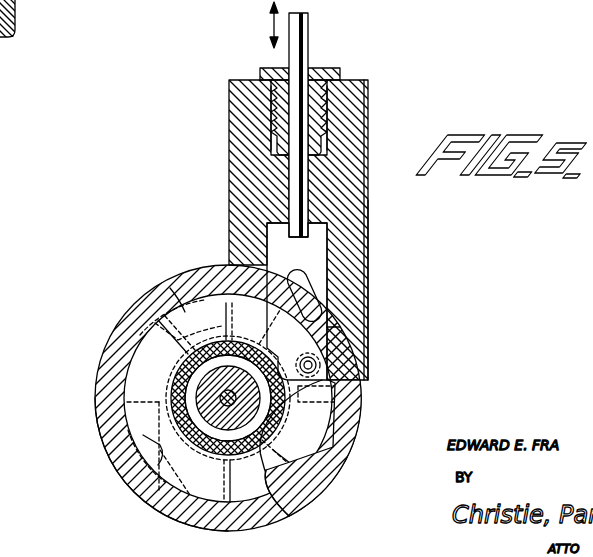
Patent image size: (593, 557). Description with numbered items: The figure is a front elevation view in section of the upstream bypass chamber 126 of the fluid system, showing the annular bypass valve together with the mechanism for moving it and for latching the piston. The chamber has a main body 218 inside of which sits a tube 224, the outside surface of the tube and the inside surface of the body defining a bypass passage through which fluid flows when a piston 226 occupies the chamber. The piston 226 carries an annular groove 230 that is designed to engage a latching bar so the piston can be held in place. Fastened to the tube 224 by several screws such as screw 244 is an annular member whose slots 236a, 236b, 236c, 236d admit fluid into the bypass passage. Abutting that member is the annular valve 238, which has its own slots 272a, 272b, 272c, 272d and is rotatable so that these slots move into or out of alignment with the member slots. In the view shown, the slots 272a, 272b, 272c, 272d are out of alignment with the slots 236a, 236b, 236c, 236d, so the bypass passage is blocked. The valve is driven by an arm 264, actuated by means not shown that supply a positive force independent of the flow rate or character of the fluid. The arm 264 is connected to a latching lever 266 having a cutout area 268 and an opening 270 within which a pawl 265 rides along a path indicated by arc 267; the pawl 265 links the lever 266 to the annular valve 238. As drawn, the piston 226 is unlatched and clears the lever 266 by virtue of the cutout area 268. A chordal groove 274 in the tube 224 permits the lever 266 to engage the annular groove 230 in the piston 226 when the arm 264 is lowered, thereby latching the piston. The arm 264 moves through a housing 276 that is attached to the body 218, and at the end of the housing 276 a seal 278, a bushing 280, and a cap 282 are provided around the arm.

The upstream bypass chamber 126 is at (106, 241).
The main body 218 is at (296, 381).
The tube 224 is at (220, 398).
The piston 226 is at (161, 475).
The annular groove 230 is at (164, 418).
The annular valve 238 is at (221, 398).
The slot of annular member 236a is at (127, 305).
The slot of annular member 236b is at (296, 398).
The slot of annular member 236c is at (334, 493).
The slot of annular member 236d is at (94, 453).
The slot of annular valve 272a is at (128, 335).
The slot of annular valve 272b is at (222, 264).
The slot of annular valve 272c is at (350, 457).
The slot of annular valve 272d is at (144, 464).
The screw 244 is at (297, 301).
The arm 264 is at (327, 119).
The pawl 265 is at (359, 317).
The latching lever 266 is at (402, 290).
The arc 267 is at (362, 416).
The cutout area 268 is at (380, 325).
The opening 270 is at (364, 371).
The chordal groove 274 is at (303, 460).
The housing 276 is at (296, 224).
The seal 278 is at (242, 119).
The bushing 280 is at (296, 224).
The cap 282 is at (296, 222).